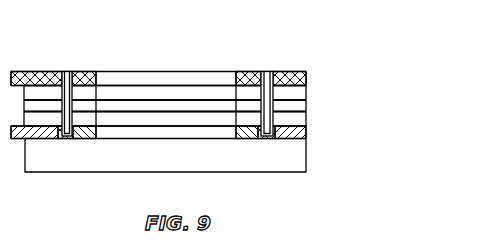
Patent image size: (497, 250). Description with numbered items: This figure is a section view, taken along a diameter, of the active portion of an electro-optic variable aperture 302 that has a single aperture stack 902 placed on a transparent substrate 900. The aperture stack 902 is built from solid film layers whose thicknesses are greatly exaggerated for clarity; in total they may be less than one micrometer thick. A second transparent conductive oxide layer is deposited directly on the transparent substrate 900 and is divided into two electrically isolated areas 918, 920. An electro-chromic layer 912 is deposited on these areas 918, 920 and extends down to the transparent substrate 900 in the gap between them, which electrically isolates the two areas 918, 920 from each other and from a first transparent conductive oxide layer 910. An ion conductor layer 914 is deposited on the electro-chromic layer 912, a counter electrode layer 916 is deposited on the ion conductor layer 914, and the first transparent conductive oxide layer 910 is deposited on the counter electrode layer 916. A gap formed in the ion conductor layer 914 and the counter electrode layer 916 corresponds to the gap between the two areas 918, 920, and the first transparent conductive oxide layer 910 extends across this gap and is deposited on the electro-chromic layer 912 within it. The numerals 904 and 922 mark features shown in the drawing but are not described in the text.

The electro-optic variable aperture 302 is at (320, 58).
The transparent substrate 900 is at (307, 154).
The aperture stack 902 is at (311, 72).
The via / trench 904 is at (62, 139).
The first transparent conductive oxide layer 910 is at (236, 78).
The electro-chromic layer 912 is at (203, 114).
The ion conductor layer 914 is at (236, 98).
The counter electrode layer 916 is at (236, 85).
The electrically isolated area 918 is at (248, 136).
The electrically isolated area 920 is at (292, 139).
The trench bottom 922 is at (270, 140).